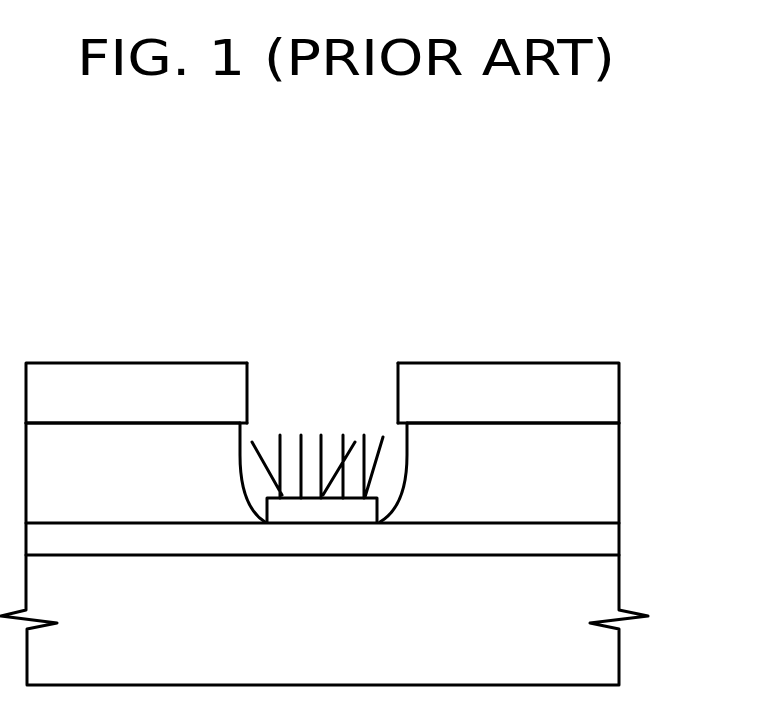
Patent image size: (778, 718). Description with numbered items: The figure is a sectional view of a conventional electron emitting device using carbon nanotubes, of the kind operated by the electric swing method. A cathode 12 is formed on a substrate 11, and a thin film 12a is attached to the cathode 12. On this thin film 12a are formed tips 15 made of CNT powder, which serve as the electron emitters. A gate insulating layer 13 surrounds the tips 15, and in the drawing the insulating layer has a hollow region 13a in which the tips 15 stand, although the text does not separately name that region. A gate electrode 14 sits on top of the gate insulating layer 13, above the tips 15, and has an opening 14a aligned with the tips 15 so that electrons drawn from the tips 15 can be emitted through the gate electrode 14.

The substrate 11 is at (598, 659).
The cathode 12 is at (597, 542).
The thin film 12a is at (368, 512).
The gate insulating layer 13 is at (597, 450).
The opening in insulating layer 13a is at (392, 470).
The gate electrode 14 is at (597, 392).
The opening 14a is at (252, 382).
The tips 15 is at (303, 443).